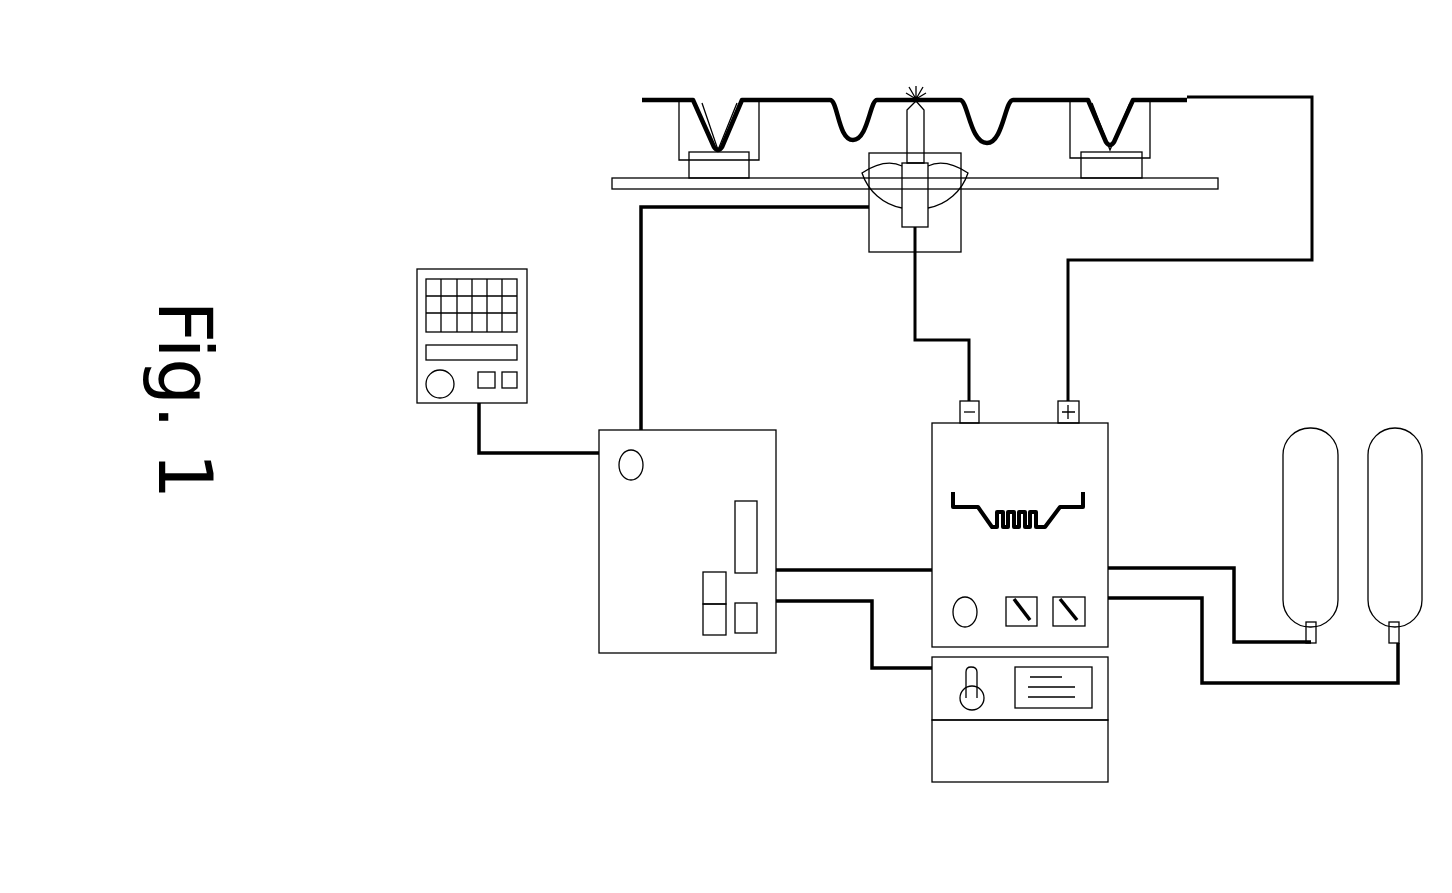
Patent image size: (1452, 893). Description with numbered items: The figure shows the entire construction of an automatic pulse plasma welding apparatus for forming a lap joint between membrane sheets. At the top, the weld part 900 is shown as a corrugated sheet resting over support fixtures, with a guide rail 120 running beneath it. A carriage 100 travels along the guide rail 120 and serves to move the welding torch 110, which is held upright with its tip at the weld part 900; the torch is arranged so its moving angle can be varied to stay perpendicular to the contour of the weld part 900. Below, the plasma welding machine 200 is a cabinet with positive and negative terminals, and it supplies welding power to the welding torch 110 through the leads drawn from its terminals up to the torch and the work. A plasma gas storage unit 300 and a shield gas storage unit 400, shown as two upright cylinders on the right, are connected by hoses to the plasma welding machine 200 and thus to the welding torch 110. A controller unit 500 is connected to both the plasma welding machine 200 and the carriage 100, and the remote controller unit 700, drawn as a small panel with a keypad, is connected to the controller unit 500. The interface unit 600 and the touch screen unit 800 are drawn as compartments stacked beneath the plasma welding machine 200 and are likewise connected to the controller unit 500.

The carriage 100 is at (870, 248).
The welding torch 110 is at (888, 97).
The guide rail 120 is at (1150, 125).
The plasma welding machine 200 is at (932, 447).
The plasma gas storage unit 300 is at (1397, 430).
The shield gas storage unit 400 is at (1288, 447).
The controller unit 500 is at (618, 653).
The interface unit 600 is at (1108, 702).
The remote controller unit 700 is at (437, 403).
The touch screen unit 800 is at (932, 743).
The weld part 900 is at (647, 98).